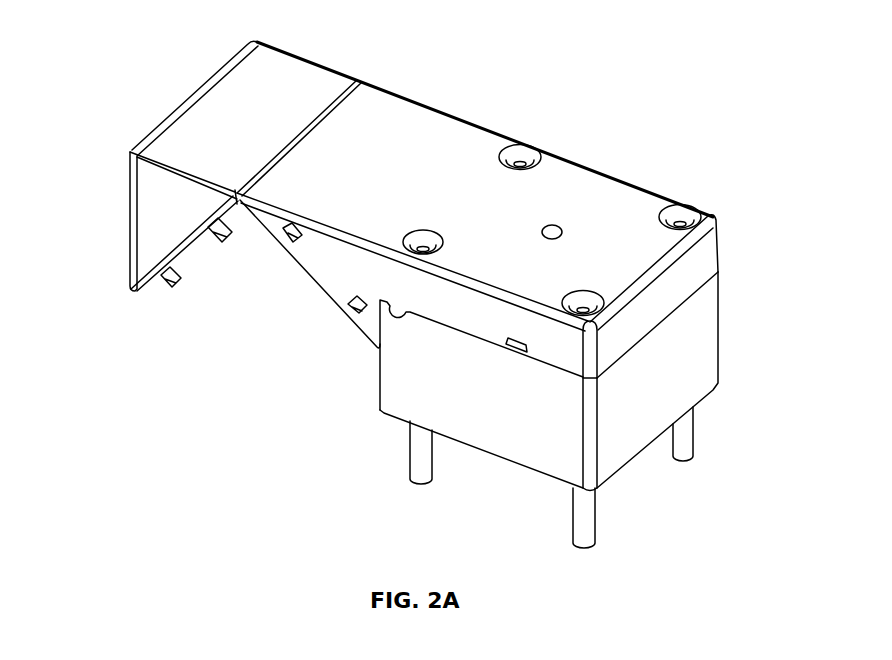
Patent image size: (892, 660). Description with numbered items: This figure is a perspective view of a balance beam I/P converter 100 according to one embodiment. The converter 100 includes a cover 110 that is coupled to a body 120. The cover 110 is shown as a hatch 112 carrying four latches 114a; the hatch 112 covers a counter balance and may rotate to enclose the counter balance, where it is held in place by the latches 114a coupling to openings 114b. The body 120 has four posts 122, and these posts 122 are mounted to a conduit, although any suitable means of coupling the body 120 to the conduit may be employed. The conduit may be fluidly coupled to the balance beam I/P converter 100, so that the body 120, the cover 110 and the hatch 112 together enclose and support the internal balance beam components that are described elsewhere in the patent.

The balance beam I/P converter 100 is at (427, 287).
The cover 110 is at (424, 209).
The hatch 112 is at (128, 266).
The latches 114a is at (168, 288).
The openings 114b is at (353, 313).
The body 120 is at (584, 410).
The posts 122 is at (578, 510).